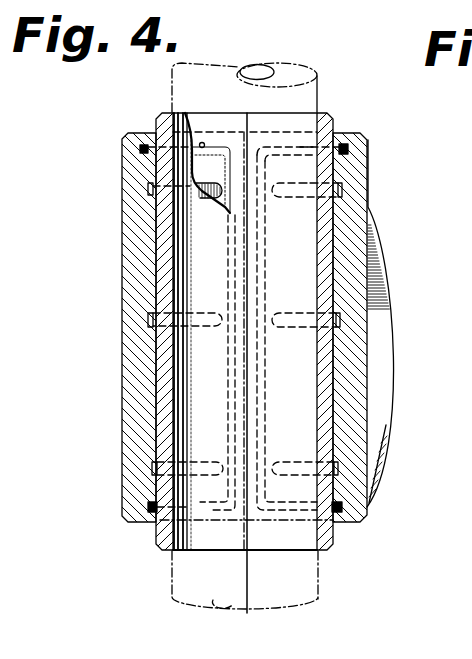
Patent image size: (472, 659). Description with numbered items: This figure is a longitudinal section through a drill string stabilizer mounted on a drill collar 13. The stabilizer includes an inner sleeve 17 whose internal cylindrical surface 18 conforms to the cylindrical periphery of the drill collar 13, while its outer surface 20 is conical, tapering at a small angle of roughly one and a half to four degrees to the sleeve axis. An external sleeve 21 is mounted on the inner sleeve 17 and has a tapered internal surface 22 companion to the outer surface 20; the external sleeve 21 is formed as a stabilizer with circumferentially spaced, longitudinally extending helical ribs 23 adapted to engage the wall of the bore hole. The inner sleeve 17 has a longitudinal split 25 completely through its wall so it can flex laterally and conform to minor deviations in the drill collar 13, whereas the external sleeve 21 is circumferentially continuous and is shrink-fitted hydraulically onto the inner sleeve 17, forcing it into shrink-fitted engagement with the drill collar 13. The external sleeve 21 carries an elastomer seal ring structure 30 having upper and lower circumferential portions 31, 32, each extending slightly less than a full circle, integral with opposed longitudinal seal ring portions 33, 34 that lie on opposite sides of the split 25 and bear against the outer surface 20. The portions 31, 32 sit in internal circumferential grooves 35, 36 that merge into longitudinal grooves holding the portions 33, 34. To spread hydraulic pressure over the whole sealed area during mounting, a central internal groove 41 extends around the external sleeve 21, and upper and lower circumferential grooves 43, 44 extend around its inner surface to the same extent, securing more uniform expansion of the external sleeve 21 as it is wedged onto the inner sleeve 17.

The drill collar 13 is at (172, 584).
The inner sleeve 17 is at (163, 393).
The internal cylindrical surface 18 is at (182, 345).
The outer surface 20 is at (337, 280).
The external sleeve 21 is at (137, 262).
The internal surface 22 is at (336, 238).
The helical ribs 23 is at (381, 383).
The longitudinal split 25 is at (251, 382).
The elastomer seal ring structure 30 is at (251, 143).
The upper circumferential seal ring portion 31 is at (140, 148).
The lower circumferential seal ring portion 32 is at (148, 508).
The longitudinal seal ring portion 33 is at (262, 286).
The longitudinal seal ring portion 34 is at (222, 215).
The internal circumferential groove 35 is at (202, 142).
The internal circumferential groove 36 is at (206, 502).
The internal groove 41 is at (340, 320).
The upper circumferential groove 43 is at (342, 190).
The lower circumferential groove 44 is at (340, 468).